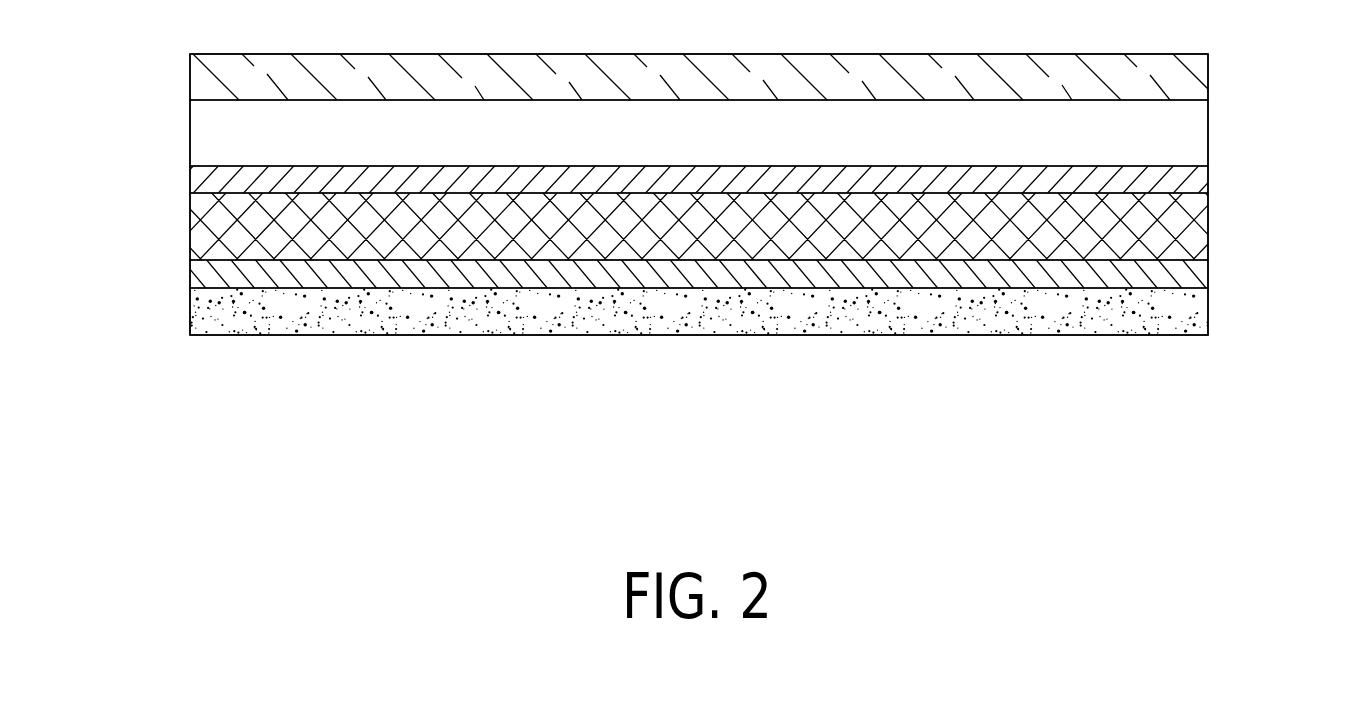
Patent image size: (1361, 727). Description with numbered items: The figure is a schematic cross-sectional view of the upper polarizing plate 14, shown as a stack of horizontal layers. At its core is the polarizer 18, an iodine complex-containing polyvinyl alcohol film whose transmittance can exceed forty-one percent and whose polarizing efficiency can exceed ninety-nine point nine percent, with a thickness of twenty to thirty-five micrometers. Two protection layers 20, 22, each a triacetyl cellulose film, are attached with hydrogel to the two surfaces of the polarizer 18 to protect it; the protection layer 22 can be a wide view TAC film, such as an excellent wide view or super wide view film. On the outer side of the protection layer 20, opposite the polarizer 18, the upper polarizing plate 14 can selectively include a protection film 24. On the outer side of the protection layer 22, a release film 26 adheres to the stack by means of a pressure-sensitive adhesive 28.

The upper polarizing plate 14 is at (166, 53).
The protection film 24 is at (1208, 75).
The protection layer 20 is at (1208, 132).
The polarizer 18 is at (1208, 177).
The protection layer 22 is at (1208, 225).
The pressure-sensitive adhesive 28 is at (1208, 270).
The release film 26 is at (1208, 308).